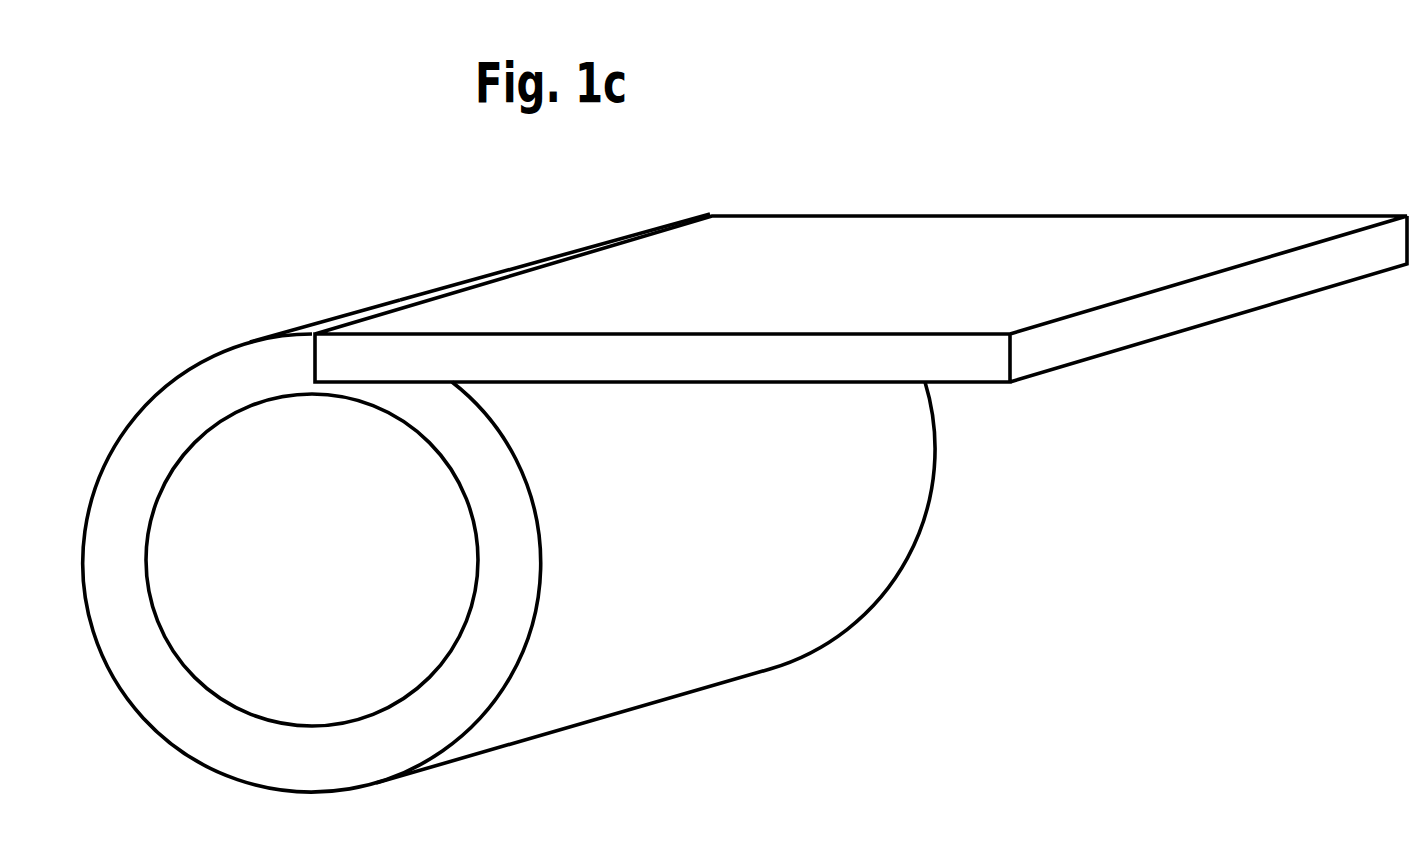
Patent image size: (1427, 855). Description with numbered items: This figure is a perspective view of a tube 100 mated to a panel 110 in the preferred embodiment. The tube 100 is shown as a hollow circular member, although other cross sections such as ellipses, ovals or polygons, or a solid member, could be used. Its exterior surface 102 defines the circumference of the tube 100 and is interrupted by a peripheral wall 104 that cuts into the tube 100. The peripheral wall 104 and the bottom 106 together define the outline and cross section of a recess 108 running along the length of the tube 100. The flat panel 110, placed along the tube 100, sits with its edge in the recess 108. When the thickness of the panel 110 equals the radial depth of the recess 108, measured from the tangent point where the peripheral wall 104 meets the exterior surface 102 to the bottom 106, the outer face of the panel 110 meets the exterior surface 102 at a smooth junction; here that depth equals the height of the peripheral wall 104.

The tube 100 is at (198, 325).
The exterior surface 102 is at (757, 637).
The peripheral wall 104 is at (318, 355).
The bottom 106 is at (398, 382).
The recess 108 is at (550, 262).
The panel 110 is at (977, 233).